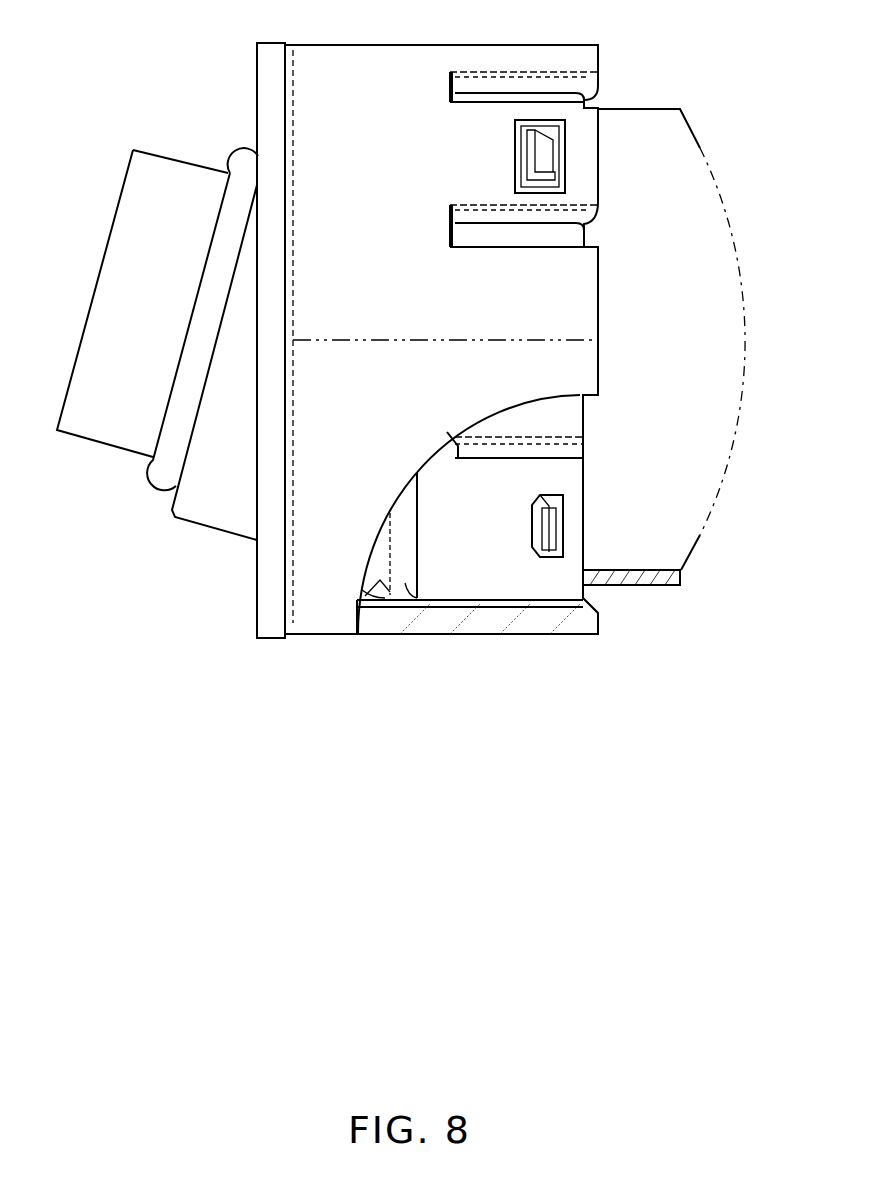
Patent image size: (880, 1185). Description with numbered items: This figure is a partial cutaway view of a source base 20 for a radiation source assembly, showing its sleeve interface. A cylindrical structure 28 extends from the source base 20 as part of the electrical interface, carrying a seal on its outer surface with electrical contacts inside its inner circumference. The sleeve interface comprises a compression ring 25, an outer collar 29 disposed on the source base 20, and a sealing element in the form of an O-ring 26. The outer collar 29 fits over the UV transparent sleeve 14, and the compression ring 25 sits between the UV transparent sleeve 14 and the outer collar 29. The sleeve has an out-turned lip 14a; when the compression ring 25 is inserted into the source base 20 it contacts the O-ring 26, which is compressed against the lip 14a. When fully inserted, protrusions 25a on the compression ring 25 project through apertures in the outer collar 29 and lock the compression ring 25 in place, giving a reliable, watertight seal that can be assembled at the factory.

The source base 20 is at (216, 85).
The UV transparent sleeve 14 is at (640, 125).
The out-turned lip 14a is at (385, 582).
The compression ring 25 is at (573, 585).
The protrusions 25a is at (563, 527).
The O-ring 26 is at (405, 592).
The cylindrical structure 28 is at (155, 488).
The outer collar 29 is at (517, 625).